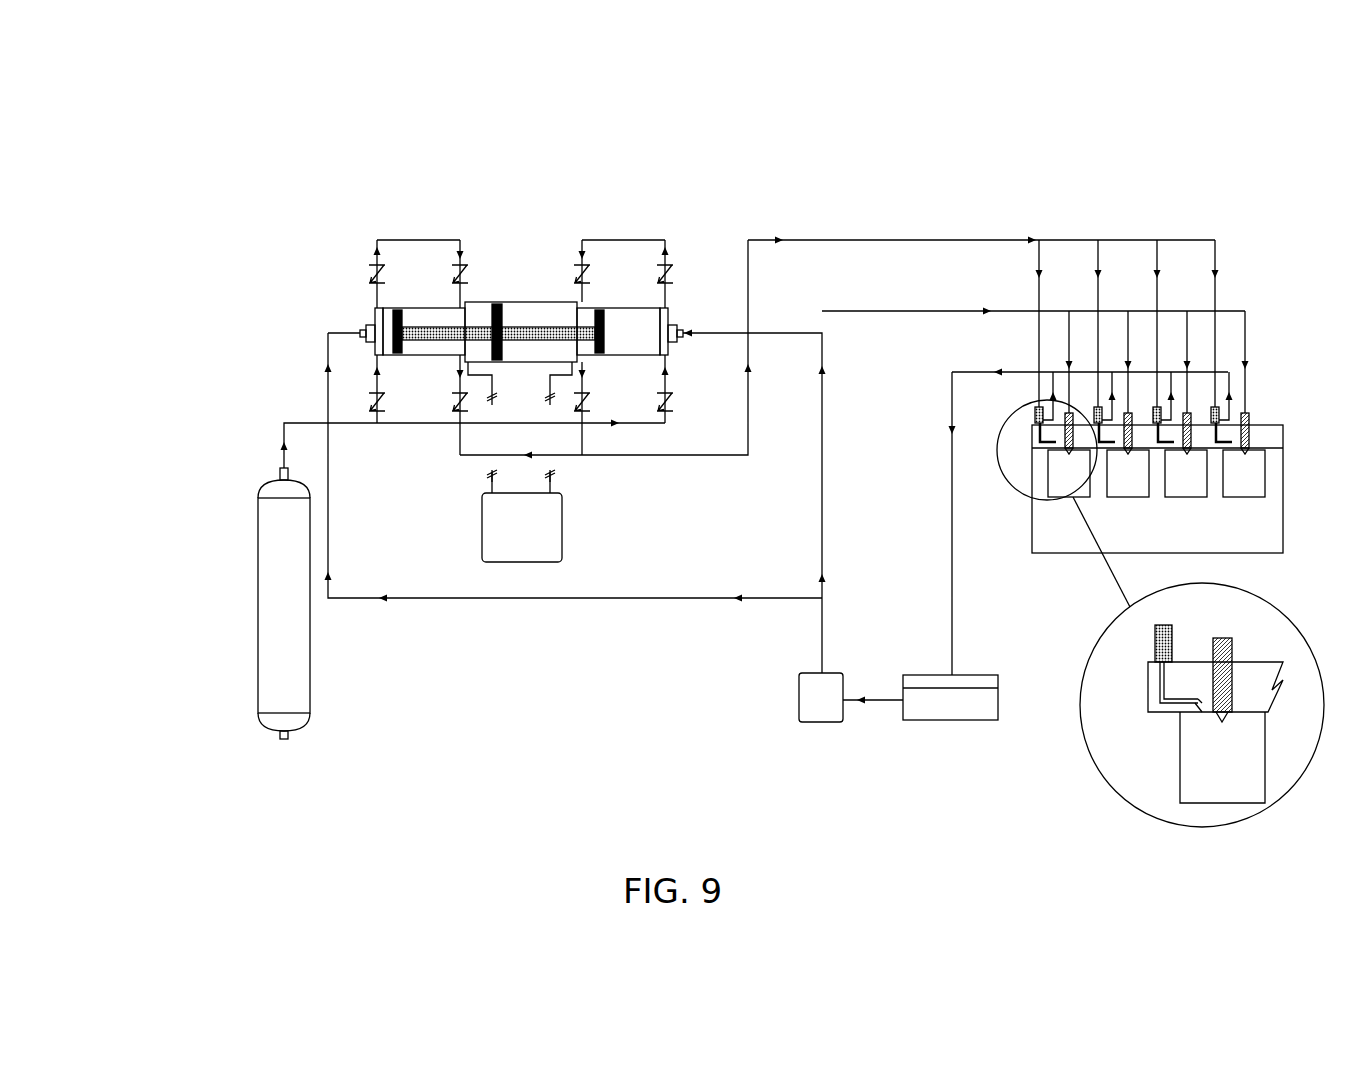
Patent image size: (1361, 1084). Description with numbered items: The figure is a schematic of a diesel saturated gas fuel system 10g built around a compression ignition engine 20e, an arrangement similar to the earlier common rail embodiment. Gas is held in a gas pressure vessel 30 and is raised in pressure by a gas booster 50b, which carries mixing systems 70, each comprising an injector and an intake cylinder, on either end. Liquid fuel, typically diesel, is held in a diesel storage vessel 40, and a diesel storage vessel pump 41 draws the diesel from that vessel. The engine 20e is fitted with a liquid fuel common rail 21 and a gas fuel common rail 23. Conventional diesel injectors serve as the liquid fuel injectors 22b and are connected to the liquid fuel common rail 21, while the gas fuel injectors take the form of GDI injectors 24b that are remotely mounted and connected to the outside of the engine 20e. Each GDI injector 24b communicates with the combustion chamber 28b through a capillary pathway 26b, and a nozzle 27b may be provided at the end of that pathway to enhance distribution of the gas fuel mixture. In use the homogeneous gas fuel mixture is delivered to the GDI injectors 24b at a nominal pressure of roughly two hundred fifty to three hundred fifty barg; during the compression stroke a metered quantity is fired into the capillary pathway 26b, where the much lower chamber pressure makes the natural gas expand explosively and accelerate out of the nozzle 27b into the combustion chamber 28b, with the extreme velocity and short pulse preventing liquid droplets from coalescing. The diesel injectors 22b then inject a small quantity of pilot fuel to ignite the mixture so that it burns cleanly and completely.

The diesel saturated gas fuel system 10g is at (946, 167).
The gas booster 50b is at (424, 279).
The mixing systems 70 is at (358, 315).
The gas fuel common rail 23 is at (1109, 313).
The liquid fuel common rail 21 is at (1104, 355).
The compression ignition engine 20e is at (1265, 515).
The GDI injectors 24b is at (1035, 410).
The liquid fuel injectors 22b is at (1255, 636).
The capillary pathway 26b is at (1160, 677).
The nozzle 27b is at (1195, 715).
The combustion chamber 28b is at (1156, 626).
The gas pressure vessel 30 is at (265, 639).
The diesel storage vessel pump 41 is at (800, 680).
The diesel storage vessel 40 is at (968, 730).